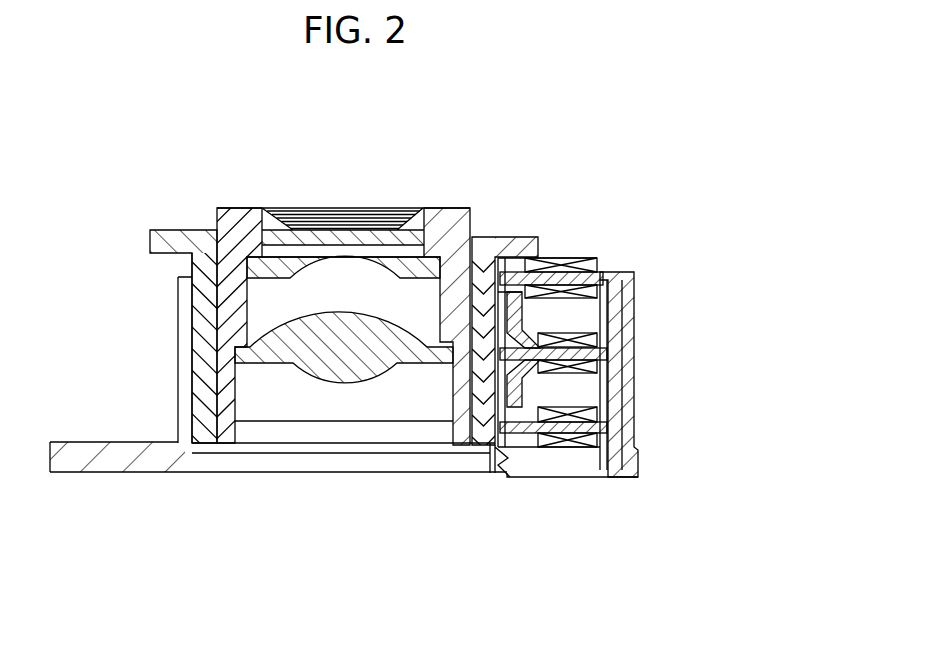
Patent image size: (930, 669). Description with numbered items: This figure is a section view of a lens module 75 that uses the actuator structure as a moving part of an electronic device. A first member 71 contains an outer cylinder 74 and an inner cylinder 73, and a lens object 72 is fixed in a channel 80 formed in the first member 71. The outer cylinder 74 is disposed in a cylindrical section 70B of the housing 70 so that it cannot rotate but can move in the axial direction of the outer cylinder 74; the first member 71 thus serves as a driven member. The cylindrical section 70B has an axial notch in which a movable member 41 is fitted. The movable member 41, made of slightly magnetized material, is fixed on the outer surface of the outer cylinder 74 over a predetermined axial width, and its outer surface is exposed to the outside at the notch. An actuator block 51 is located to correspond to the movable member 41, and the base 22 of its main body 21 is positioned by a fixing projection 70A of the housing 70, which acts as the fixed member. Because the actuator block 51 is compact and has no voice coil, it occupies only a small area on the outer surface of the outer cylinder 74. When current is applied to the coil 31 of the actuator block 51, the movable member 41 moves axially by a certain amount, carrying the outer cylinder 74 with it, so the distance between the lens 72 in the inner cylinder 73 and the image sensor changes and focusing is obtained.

The housing 70 is at (103, 448).
The fixing projection 70A is at (625, 277).
The cylindrical section 70B is at (183, 332).
The first member 71 is at (158, 135).
The lens object 72 is at (333, 327).
The inner cylinder 73 is at (240, 218).
The outer cylinder 74 is at (203, 253).
The lens module 75 is at (548, 192).
The channel 80 is at (443, 283).
The movable member 41 is at (490, 445).
The actuator block 51 is at (733, 350).
The base 22 is at (607, 360).
The main body 21 is at (561, 352).
The coil 31 is at (600, 440).